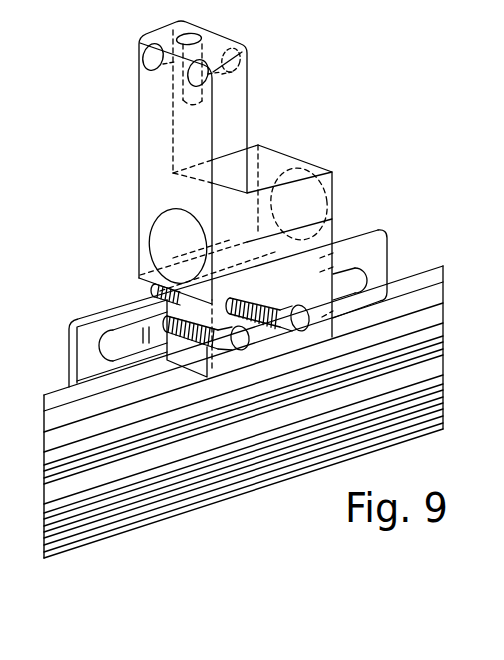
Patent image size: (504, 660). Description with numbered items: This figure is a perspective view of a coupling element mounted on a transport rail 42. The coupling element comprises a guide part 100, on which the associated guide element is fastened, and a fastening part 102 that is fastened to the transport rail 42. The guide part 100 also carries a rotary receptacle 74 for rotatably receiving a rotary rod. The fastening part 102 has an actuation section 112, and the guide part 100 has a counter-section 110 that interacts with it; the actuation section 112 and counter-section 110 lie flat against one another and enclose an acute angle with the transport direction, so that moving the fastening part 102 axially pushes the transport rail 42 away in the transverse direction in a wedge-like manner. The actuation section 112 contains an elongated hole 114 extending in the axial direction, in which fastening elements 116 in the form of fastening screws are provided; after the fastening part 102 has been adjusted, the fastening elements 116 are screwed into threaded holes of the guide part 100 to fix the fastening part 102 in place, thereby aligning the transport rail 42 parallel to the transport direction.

The guide part 100 is at (128, 153).
The rotary receptacle 74 is at (303, 198).
The counter-section 110 is at (178, 307).
The elongated hole 114 is at (124, 343).
The actuation section 112 is at (363, 262).
The fastening elements 116 is at (265, 328).
The fastening part 102 is at (402, 264).
The transport rail 42 is at (98, 495).